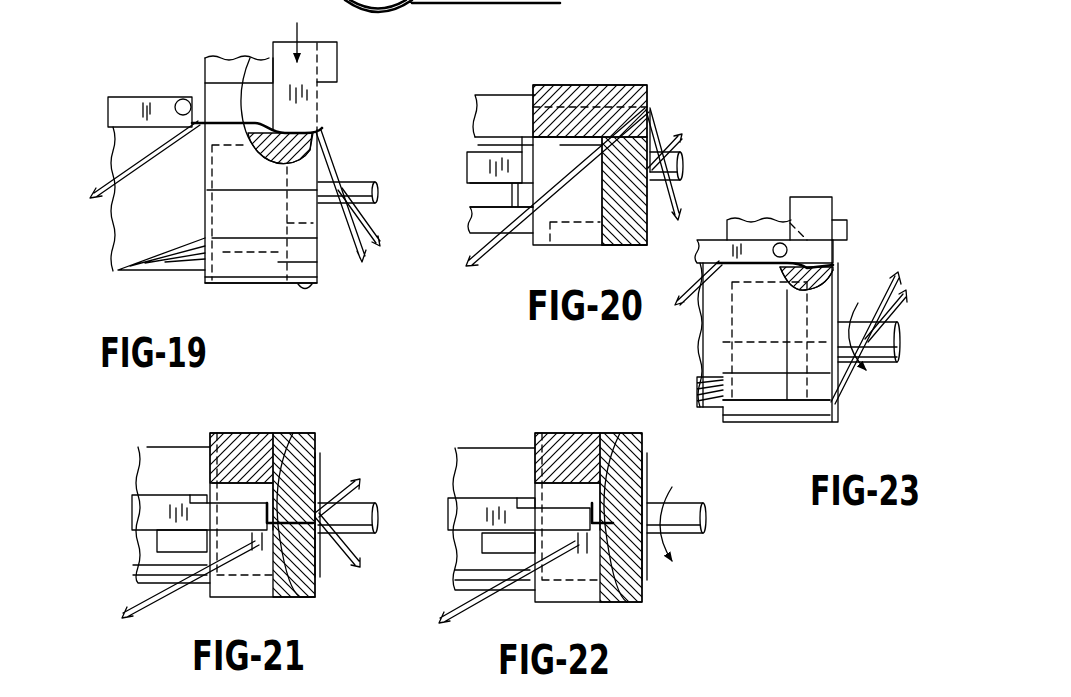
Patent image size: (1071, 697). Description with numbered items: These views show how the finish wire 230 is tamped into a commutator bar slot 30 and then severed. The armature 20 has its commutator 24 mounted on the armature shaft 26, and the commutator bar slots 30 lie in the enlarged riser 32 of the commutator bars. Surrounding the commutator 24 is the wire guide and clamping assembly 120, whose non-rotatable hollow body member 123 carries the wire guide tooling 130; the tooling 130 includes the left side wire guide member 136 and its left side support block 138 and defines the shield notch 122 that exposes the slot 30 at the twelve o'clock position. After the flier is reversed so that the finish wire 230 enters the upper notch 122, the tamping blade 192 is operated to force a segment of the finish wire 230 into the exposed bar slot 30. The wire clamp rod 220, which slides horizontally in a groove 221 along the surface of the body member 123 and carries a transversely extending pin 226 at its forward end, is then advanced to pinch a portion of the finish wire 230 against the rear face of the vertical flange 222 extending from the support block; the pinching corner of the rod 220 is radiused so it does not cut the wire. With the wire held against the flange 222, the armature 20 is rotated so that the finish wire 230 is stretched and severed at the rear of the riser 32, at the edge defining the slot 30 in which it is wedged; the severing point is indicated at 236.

In FIG. 19, the armature 20 is at (188, 85).
In FIG. 23, the armature 20 is at (893, 368).
In FIG. 22, the armature 20 is at (714, 498).
In FIG. 19, the commutator 24 is at (223, 286).
In FIG. 20, the commutator 24 is at (550, 250).
In FIG. 23, the commutator 24 is at (740, 405).
In FIG. 21, the commutator 24 is at (247, 447).
In FIG. 22, the commutator 24 is at (565, 453).
In FIG. 19, the armature shaft 26 is at (362, 180).
In FIG. 20, the armature shaft 26 is at (683, 165).
In FIG. 23, the armature shaft 26 is at (887, 340).
In FIG. 21, the armature shaft 26 is at (368, 503).
In FIG. 22, the armature shaft 26 is at (705, 533).
In FIG. 19, the commutator bar slot 30 is at (312, 118).
In FIG. 20, the commutator bar slot 30 is at (538, 180).
In FIG. 21, the commutator bar slot 30 is at (317, 452).
In FIG. 19, the riser 32 is at (307, 287).
In FIG. 20, the riser 32 is at (618, 248).
In FIG. 21, the riser 32 is at (310, 603).
In FIG. 19, the wire guide and clamping assembly 120 is at (160, 282).
In FIG. 20, the wire guide and clamping assembly 120 is at (588, 78).
In FIG. 21, the wire guide and clamping assembly 120 is at (185, 441).
In FIG. 22, the wire guide and clamping assembly 120 is at (512, 441).
In FIG. 19, the shield notch 122 is at (254, 58).
In FIG. 23, the shield notch 122 is at (828, 237).
In FIG. 19, the body member 123 is at (113, 275).
In FIG. 20, the body member 123 is at (498, 97).
In FIG. 23, the body member 123 is at (700, 365).
In FIG. 21, the body member 123 is at (157, 447).
In FIG. 22, the body member 123 is at (480, 447).
In FIG. 19, the wire guide tooling 130 is at (213, 50).
In FIG. 20, the wire guide tooling 130 is at (613, 76).
In FIG. 21, the wire guide tooling 130 is at (268, 429).
In FIG. 22, the wire guide tooling 130 is at (603, 426).
In FIG. 19, the left side wire guide member 136 is at (281, 286).
In FIG. 23, the left side wire guide member 136 is at (815, 400).
In FIG. 23, the left side support block 138 is at (767, 396).
In FIG. 19, the tamping blade 192 is at (320, 42).
In FIG. 20, the tamping blade 192 is at (645, 111).
In FIG. 23, the tamping blade 192 is at (820, 197).
In FIG. 19, the wire clamp rod 220 is at (138, 96).
In FIG. 20, the wire clamp rod 220 is at (470, 158).
In FIG. 23, the wire clamp rod 220 is at (743, 243).
In FIG. 21, the wire clamp rod 220 is at (140, 500).
In FIG. 22, the wire clamp rod 220 is at (460, 513).
In FIG. 20, the groove 221 is at (515, 147).
In FIG. 21, the groove 221 is at (203, 500).
In FIG. 22, the groove 221 is at (527, 498).
In FIG. 21, the vertical flange 222 is at (293, 597).
In FIG. 22, the vertical flange 222 is at (622, 602).
In FIG. 19, the pin 226 is at (186, 99).
In FIG. 20, the pin 226 is at (470, 193).
In FIG. 23, the pin 226 is at (777, 243).
In FIG. 21, the pin 226 is at (227, 597).
In FIG. 22, the pin 226 is at (570, 602).
In FIG. 19, the finish wire 230 is at (140, 170).
In FIG. 20, the finish wire 230 is at (493, 252).
In FIG. 23, the finish wire 230 is at (680, 305).
In FIG. 21, the finish wire 230 is at (135, 603).
In FIG. 22, the finish wire 230 is at (450, 612).
In FIG. 23, the severing point 236 is at (833, 266).
In FIG. 22, the severing point 236 is at (645, 483).